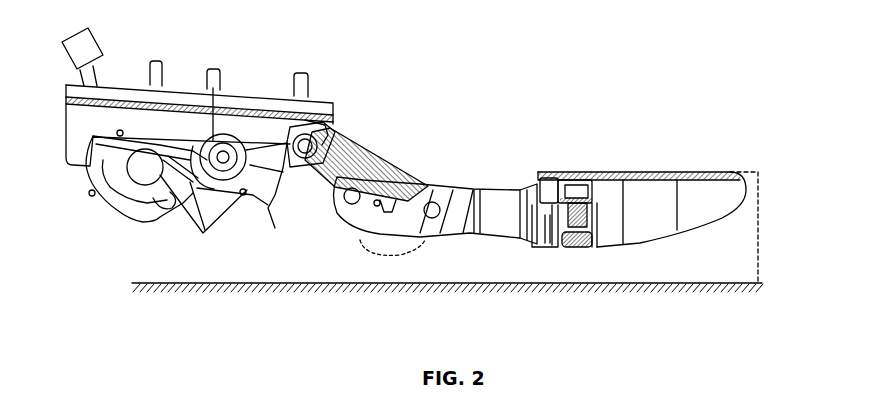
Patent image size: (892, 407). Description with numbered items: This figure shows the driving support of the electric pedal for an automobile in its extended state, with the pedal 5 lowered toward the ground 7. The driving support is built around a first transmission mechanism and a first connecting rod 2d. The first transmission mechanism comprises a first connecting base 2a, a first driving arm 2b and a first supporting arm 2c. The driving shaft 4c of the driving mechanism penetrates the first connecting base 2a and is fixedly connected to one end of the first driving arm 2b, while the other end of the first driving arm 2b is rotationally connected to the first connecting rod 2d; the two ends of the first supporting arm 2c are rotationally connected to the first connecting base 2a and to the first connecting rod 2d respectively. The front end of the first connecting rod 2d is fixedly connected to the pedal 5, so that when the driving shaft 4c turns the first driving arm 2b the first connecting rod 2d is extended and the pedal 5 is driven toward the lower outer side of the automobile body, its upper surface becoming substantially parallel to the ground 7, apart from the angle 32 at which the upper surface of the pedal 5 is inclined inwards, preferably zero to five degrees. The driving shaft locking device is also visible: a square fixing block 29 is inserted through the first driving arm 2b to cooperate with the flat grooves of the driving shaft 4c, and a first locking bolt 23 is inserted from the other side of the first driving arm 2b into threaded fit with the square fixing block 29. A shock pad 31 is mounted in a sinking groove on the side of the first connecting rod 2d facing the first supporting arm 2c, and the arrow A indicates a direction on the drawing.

The first connecting base 2a is at (253, 92).
The first driving arm 2b is at (287, 182).
The first supporting arm 2c is at (377, 145).
The first connecting rod 2d is at (487, 210).
The driving shaft 4c is at (213, 85).
The pedal 5 is at (693, 235).
The ground 7 is at (447, 292).
The first locking bolt 23 is at (195, 212).
The square fixing block 29 is at (142, 207).
The shock pad 31 is at (363, 243).
The angle of upper surface of pedal being inclined inwards 32 is at (765, 218).
The direction arrow A is at (424, 178).